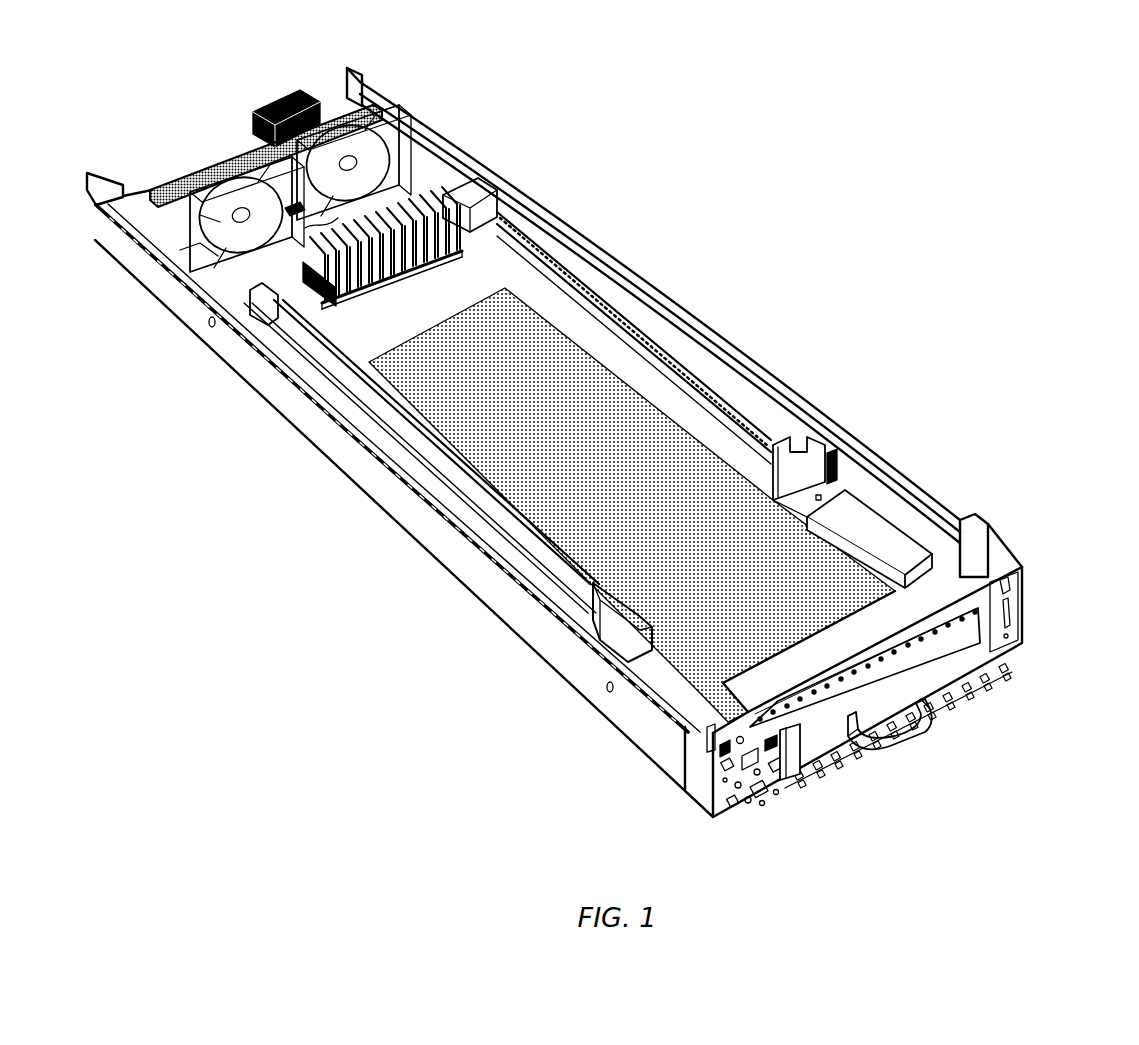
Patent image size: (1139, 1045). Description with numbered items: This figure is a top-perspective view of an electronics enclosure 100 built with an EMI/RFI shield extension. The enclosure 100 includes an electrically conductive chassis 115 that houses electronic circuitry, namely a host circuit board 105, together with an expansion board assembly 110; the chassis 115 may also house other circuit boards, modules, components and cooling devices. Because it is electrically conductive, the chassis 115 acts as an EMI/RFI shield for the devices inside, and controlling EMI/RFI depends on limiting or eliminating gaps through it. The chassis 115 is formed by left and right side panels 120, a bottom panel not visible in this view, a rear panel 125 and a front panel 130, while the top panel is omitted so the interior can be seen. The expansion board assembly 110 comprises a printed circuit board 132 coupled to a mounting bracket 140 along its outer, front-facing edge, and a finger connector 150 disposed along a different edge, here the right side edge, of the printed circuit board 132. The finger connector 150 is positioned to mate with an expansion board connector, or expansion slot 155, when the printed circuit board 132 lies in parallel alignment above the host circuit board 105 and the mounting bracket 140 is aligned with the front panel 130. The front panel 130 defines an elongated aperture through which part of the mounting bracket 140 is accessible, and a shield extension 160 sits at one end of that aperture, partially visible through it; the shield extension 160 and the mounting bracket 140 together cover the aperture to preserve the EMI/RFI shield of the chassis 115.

The electronics enclosure 100 is at (554, 442).
The host circuit board 105 is at (472, 277).
The expansion board assembly 110 is at (677, 603).
The chassis 115 is at (260, 380).
The side panels 120 is at (678, 303).
The rear panel 125 is at (213, 163).
The front panel 130 is at (1027, 588).
The printed circuit board 132 is at (632, 505).
The mounting bracket 140 is at (995, 660).
The finger connector 150 is at (833, 525).
The expansion slot 155 is at (888, 540).
The shield extension 160 is at (800, 777).